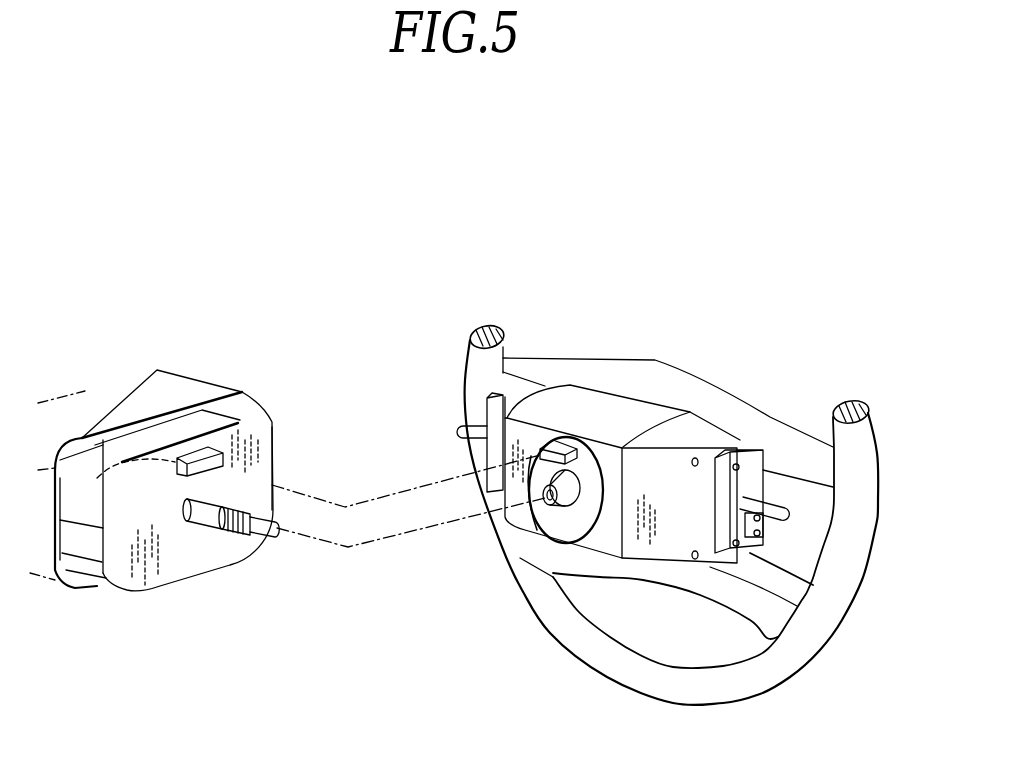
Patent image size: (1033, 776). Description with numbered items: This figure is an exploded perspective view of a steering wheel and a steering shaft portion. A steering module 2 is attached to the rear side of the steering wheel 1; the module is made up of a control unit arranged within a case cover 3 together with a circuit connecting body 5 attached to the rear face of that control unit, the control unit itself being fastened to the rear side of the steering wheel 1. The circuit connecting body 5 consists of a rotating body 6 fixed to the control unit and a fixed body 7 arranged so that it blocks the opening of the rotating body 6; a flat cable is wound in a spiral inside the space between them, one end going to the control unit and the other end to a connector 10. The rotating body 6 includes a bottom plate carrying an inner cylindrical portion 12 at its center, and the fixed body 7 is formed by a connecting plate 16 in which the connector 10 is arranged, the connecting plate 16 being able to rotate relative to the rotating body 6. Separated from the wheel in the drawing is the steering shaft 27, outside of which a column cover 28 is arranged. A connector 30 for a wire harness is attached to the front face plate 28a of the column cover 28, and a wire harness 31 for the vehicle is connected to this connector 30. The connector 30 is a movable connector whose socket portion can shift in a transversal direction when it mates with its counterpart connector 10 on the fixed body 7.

The steering wheel 1 is at (730, 693).
The steering module 2 is at (592, 396).
The case cover 3 is at (605, 407).
The circuit connecting body 5 is at (601, 524).
The rotating body 6 is at (578, 485).
The fixed body 7 is at (555, 576).
The connector 10 is at (557, 445).
The inner cylindrical portion 12 is at (545, 500).
The connecting plate 16 is at (577, 525).
The steering shaft 27 is at (230, 522).
The column cover 28 is at (208, 423).
The front face plate 28a is at (267, 463).
The connector for a wire harness 30 is at (218, 457).
The wire harness 31 is at (97, 477).